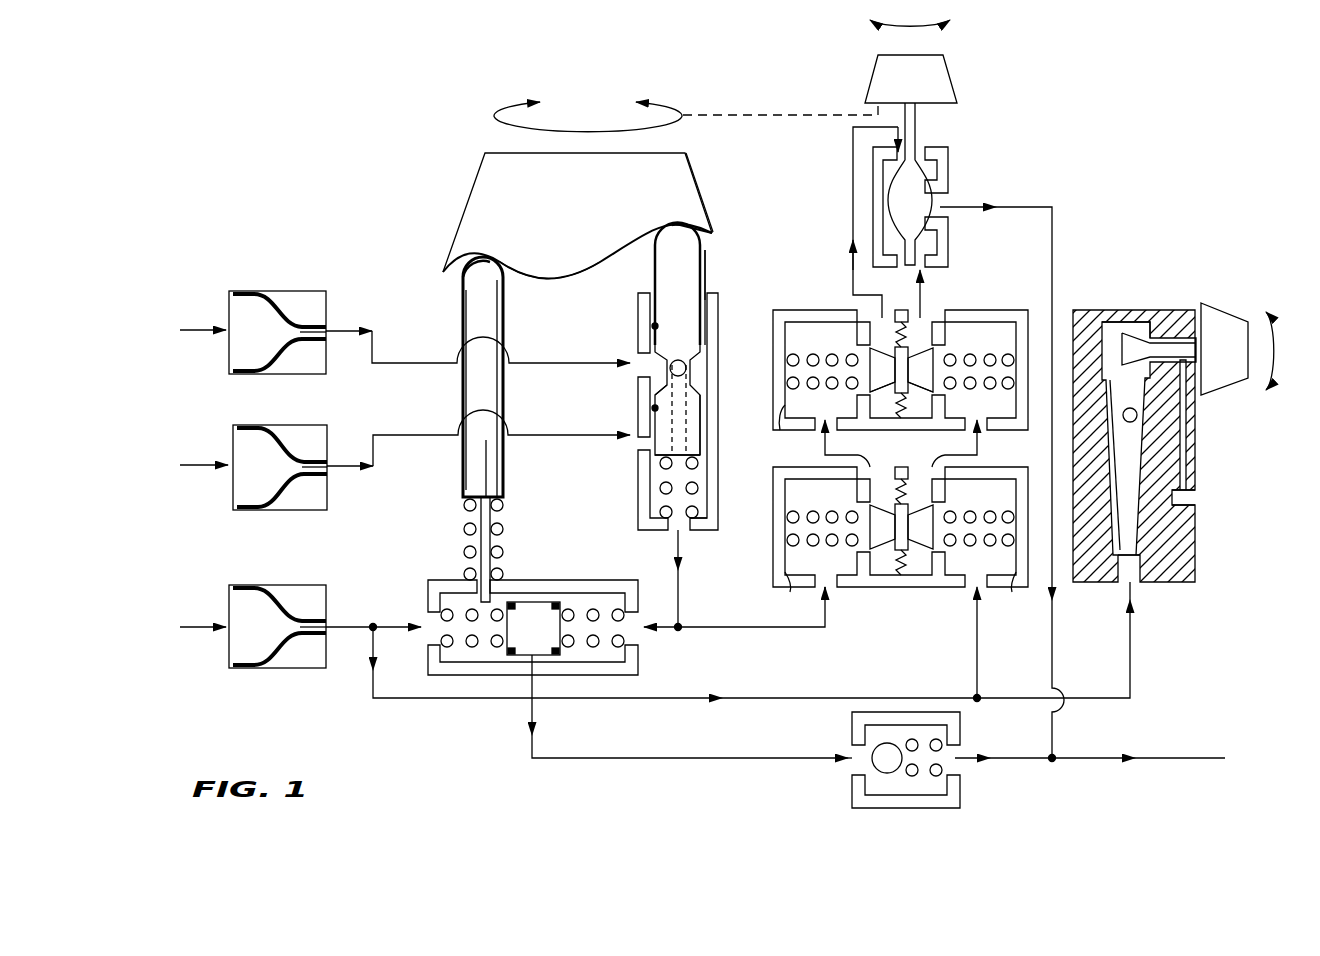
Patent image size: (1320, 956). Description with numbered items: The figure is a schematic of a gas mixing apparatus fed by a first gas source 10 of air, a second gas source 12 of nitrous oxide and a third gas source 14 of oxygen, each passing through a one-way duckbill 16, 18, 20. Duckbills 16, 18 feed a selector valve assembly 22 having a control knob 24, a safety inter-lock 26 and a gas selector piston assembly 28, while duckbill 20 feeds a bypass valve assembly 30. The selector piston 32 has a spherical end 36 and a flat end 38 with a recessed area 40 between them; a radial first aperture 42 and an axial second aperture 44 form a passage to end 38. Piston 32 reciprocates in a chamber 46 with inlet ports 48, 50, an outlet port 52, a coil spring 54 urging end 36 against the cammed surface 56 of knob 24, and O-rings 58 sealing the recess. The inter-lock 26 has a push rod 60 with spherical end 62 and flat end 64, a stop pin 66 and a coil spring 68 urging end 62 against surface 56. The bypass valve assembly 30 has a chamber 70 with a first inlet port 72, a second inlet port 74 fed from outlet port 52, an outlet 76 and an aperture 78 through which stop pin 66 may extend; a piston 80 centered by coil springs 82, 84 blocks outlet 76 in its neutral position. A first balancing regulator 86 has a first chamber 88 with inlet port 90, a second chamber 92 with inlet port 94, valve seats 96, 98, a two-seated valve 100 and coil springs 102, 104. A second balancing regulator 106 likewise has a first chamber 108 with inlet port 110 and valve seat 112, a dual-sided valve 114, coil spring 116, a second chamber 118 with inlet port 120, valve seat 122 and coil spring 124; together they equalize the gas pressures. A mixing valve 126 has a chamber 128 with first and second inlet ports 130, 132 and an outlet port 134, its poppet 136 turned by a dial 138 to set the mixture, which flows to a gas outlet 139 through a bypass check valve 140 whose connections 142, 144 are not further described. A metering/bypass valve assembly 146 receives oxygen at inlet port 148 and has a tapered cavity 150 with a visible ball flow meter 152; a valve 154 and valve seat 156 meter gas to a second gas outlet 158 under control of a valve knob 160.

The first gas source 10 is at (186, 330).
The second gas source 12 is at (186, 462).
The third gas source 14 is at (186, 625).
The duckbill 16 is at (245, 288).
The duckbill 18 is at (240, 422).
The duckbill 20 is at (241, 583).
The selector valve assembly 22 is at (446, 182).
The selector valve control knob 24 is at (594, 203).
The safety inter-lock 26 is at (452, 312).
The gas selector piston assembly 28 is at (720, 266).
The bypass valve assembly 30 is at (425, 592).
The piston 32 is at (690, 287).
The first contoured end 36 is at (712, 233).
The second flat end 38 is at (705, 478).
The recessed area 40 is at (656, 372).
The first aperture 42 is at (686, 368).
The second aperture 44 is at (708, 422).
The cylindrical chamber 46 is at (702, 512).
The inlet port 48 is at (645, 370).
The inlet port 50 is at (645, 442).
The outlet port 52 is at (688, 534).
The coil spring 54 is at (660, 492).
The cammed surface 56 is at (560, 282).
The O-rings 58 is at (654, 324).
The push rod 60 is at (465, 335).
The first contoured end 62 is at (450, 272).
The flat end 64 is at (467, 505).
The stop pin 66 is at (502, 530).
The coil spring 68 is at (464, 537).
The chamber 70 is at (595, 648).
The first inlet port 72 is at (432, 638).
The second inlet port 74 is at (636, 636).
The outlet 76 is at (540, 668).
The aperture 78 is at (500, 598).
The piston 80 is at (547, 637).
The coil spring 82 is at (473, 648).
The coil spring 84 is at (598, 658).
The first balancing regulator 86 is at (896, 582).
The first chamber 88 is at (792, 590).
The inlet port 90 is at (830, 590).
The second chamber 92 is at (996, 590).
The inlet port 94 is at (996, 642).
The valve seat 96 is at (858, 440).
The valve seat 98 is at (952, 440).
The two-seated valve 100 is at (870, 550).
The coil spring 102 is at (794, 520).
The coil spring 104 is at (1008, 544).
The second balancing regulator 106 is at (885, 354).
The first chamber 108 is at (782, 436).
The inlet port 110 is at (820, 440).
The valve seat 112 is at (866, 340).
The mating valve 114 is at (868, 394).
The coil spring 116 is at (814, 362).
The second chamber 118 is at (1010, 408).
The inlet port 120 is at (990, 438).
The valve seat 122 is at (938, 340).
The coil spring 124 is at (986, 362).
The mixing valve 126 is at (938, 389).
The chamber 128 is at (942, 180).
The first inlet port 130 is at (920, 150).
The second inlet port 132 is at (932, 256).
The outlet port 134 is at (948, 208).
The mixing valve poppet 136 is at (902, 203).
The dial 138 is at (925, 88).
The gas outlet 139 is at (1190, 757).
The bypass check valve 140 is at (965, 734).
The check valve inlet 142 is at (858, 765).
The check valve outlet 144 is at (958, 765).
The metering/bypass valve assembly 146 is at (1173, 412).
The inlet port 148 is at (1136, 584).
The tapered cavity 150 is at (1136, 445).
The flow meter 152 is at (1138, 415).
The valve 154 is at (1130, 340).
The valve seat 156 is at (1174, 332).
The second gas outlet 158 is at (1206, 492).
The valve knob 160 is at (1243, 353).